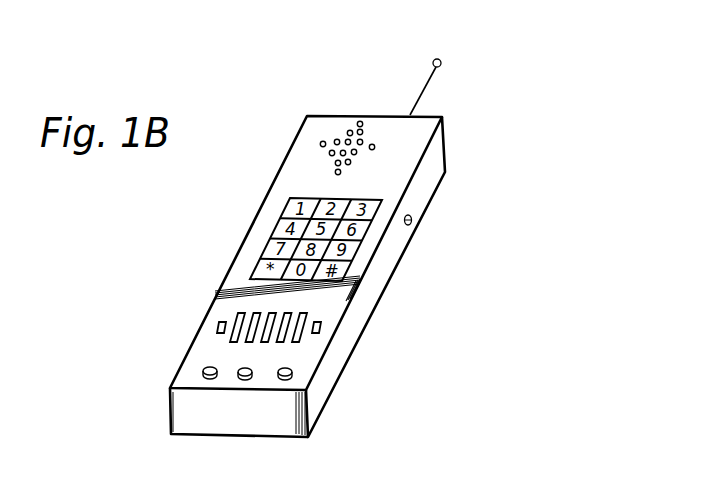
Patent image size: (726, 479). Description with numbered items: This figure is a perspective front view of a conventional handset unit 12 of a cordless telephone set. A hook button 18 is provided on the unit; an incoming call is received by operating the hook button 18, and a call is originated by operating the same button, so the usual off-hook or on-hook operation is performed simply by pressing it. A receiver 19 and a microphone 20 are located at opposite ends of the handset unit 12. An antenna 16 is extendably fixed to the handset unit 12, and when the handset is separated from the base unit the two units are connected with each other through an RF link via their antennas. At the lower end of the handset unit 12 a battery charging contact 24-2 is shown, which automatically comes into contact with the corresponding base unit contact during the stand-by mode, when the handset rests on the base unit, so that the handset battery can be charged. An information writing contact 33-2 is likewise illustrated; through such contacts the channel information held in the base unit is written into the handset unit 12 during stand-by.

The handset unit 12 is at (241, 246).
The antenna 16 is at (420, 95).
The hook button 18 is at (412, 220).
The receiver 19 is at (332, 136).
The microphone 20 is at (231, 318).
The battery charging contact 24-2 is at (224, 377).
The information writing contact 33-2 is at (292, 372).